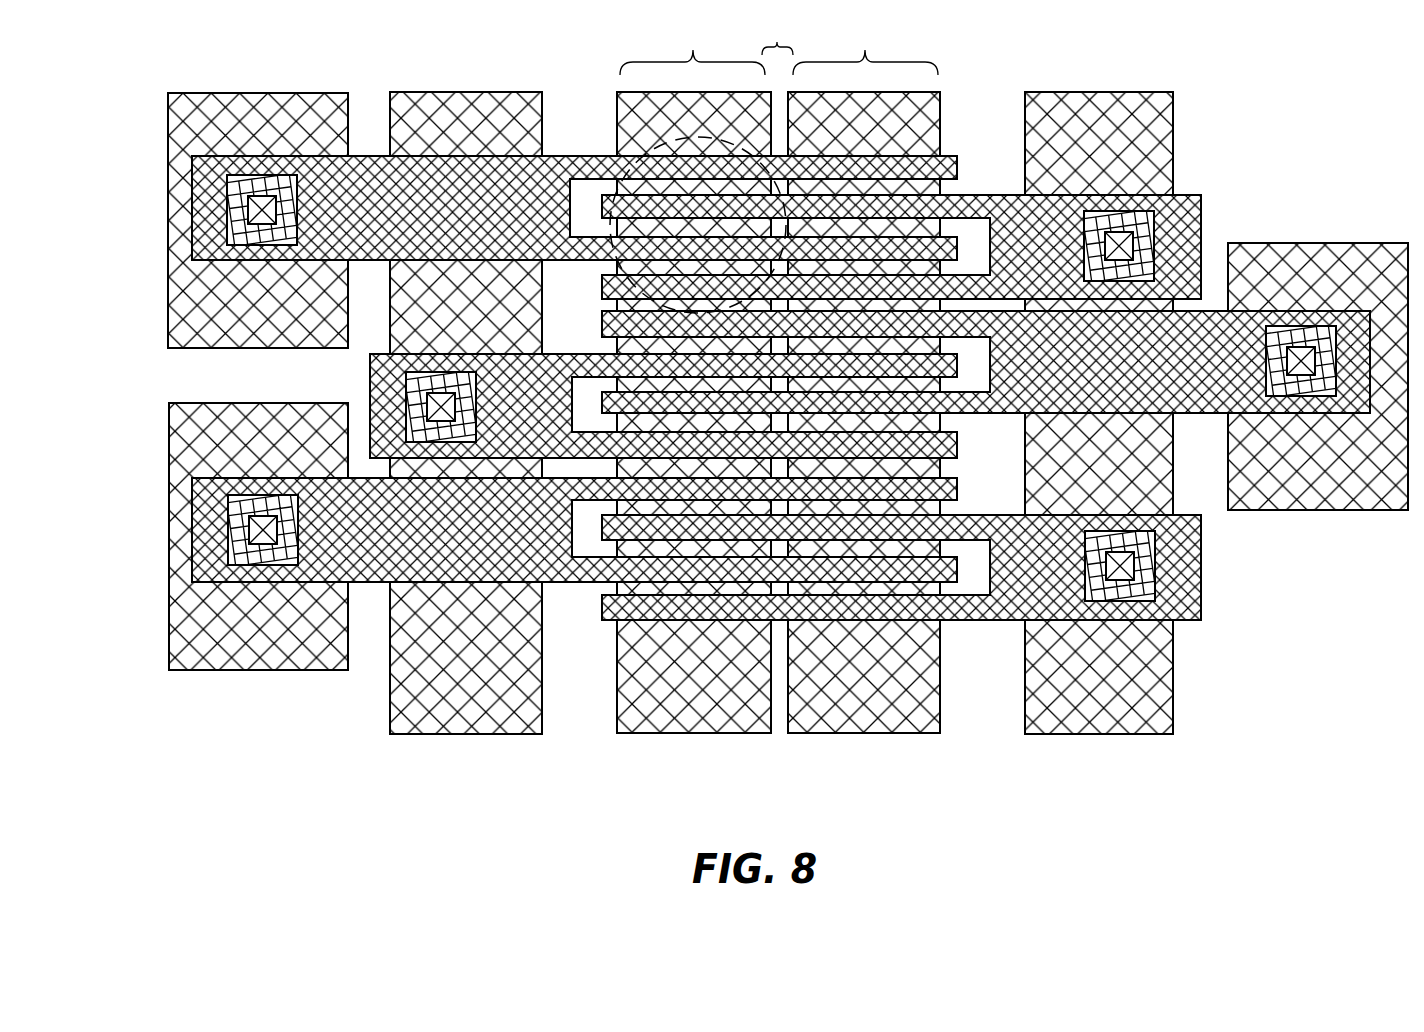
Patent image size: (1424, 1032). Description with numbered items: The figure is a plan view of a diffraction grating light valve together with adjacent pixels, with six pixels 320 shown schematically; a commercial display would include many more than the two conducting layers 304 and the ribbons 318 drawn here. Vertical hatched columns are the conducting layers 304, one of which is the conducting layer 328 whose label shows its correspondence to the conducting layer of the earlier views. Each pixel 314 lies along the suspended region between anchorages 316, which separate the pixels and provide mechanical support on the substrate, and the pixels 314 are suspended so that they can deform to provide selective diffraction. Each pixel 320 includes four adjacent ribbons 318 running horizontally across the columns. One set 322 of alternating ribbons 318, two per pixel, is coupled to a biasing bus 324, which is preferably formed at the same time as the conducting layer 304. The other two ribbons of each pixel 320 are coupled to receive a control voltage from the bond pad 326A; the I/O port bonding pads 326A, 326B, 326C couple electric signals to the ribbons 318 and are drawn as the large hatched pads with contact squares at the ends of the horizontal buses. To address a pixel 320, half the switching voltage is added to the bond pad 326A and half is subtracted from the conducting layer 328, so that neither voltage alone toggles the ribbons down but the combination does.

The conducting layer 304 is at (653, 735).
The pixel 314 is at (779, 41).
The anchorage 316 is at (780, 28).
The ribbon 318 is at (958, 168).
The pixel 320 is at (604, 148).
The set of alternating ribbons 322 is at (601, 208).
The biasing bus 324 is at (489, 735).
The bond pad 326A is at (206, 90).
The bond pad 326B is at (306, 670).
The bond pad 326C is at (1285, 511).
The conducting layer 328 is at (731, 733).